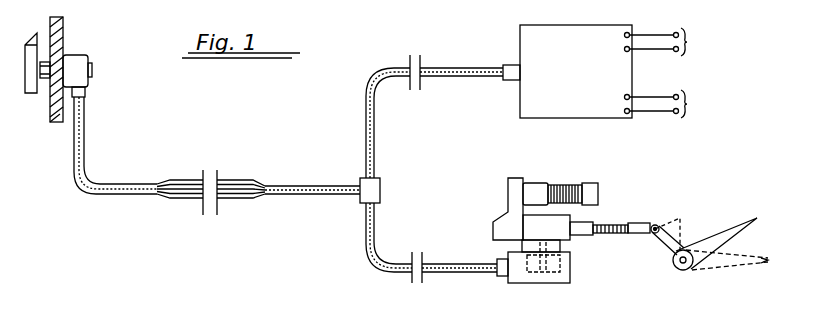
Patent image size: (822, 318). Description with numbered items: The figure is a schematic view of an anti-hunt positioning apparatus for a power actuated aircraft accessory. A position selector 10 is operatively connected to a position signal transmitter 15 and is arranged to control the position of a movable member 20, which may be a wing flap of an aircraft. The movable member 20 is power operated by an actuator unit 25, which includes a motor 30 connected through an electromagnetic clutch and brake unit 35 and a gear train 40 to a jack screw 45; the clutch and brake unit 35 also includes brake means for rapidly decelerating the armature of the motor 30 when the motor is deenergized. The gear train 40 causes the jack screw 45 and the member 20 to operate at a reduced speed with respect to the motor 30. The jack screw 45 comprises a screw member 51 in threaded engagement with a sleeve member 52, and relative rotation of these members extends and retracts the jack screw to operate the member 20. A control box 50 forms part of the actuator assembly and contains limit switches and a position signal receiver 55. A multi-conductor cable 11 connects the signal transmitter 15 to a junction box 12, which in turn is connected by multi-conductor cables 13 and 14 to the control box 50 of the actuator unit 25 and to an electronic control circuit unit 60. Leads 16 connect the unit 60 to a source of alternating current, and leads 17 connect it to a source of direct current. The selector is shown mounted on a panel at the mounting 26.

The position selector 10 is at (28, 47).
The multi-conductor cable 11 is at (130, 188).
The junction box 12 is at (380, 190).
The multi-conductor cable 13 is at (366, 232).
The multi-conductor cable 14 is at (366, 130).
The position signal transmitter 15 is at (74, 56).
The leads 16 is at (647, 46).
The leads 17 is at (650, 104).
The movable member 20 is at (722, 236).
The actuator unit 25 is at (615, 280).
The mounting wall 26 is at (52, 98).
The motor 30 is at (568, 185).
The electromagnetic clutch and brake unit 35 is at (537, 183).
The gear train 40 is at (497, 220).
The jack screw 45 is at (580, 235).
The control box 50 is at (564, 283).
The screw member 51 is at (617, 225).
The sleeve member 52 is at (655, 225).
The position signal receiver 55 is at (538, 283).
The electronic control circuit unit 60 is at (520, 107).